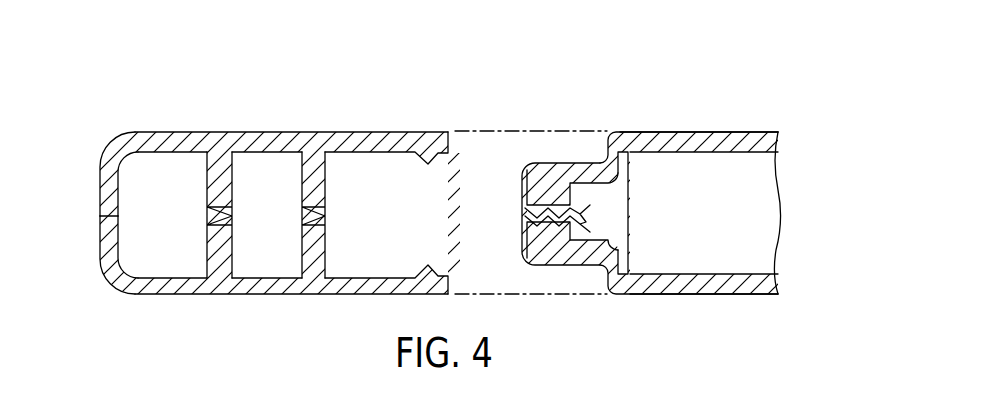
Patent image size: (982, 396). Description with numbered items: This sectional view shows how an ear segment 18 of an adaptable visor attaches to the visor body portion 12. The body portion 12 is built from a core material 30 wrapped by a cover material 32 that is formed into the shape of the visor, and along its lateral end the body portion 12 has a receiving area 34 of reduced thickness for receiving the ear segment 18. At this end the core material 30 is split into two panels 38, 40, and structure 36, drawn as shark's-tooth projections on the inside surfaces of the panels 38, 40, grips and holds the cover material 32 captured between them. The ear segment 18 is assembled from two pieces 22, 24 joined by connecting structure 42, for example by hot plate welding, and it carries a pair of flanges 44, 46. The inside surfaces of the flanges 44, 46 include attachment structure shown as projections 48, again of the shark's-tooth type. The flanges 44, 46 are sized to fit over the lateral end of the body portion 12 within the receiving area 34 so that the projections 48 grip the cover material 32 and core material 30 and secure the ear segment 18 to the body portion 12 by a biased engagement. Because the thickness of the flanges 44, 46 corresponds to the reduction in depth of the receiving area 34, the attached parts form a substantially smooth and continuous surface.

The body portion 12 is at (654, 150).
The ear segment 18 is at (265, 198).
The piece 22 is at (111, 152).
The piece 24 is at (123, 283).
The core material 30 is at (777, 141).
The cover material 32 is at (727, 133).
The receiving area 34 is at (544, 153).
The structure 36 is at (543, 195).
The panel 38 is at (688, 143).
The panel 40 is at (723, 280).
The connecting structure 42 is at (203, 180).
The flange 44 is at (383, 135).
The flange 46 is at (343, 289).
The projections 48 is at (417, 157).